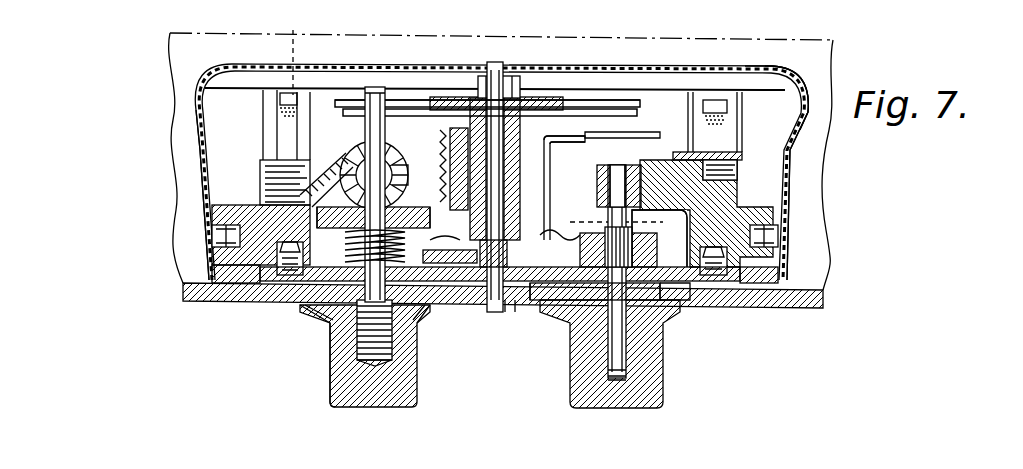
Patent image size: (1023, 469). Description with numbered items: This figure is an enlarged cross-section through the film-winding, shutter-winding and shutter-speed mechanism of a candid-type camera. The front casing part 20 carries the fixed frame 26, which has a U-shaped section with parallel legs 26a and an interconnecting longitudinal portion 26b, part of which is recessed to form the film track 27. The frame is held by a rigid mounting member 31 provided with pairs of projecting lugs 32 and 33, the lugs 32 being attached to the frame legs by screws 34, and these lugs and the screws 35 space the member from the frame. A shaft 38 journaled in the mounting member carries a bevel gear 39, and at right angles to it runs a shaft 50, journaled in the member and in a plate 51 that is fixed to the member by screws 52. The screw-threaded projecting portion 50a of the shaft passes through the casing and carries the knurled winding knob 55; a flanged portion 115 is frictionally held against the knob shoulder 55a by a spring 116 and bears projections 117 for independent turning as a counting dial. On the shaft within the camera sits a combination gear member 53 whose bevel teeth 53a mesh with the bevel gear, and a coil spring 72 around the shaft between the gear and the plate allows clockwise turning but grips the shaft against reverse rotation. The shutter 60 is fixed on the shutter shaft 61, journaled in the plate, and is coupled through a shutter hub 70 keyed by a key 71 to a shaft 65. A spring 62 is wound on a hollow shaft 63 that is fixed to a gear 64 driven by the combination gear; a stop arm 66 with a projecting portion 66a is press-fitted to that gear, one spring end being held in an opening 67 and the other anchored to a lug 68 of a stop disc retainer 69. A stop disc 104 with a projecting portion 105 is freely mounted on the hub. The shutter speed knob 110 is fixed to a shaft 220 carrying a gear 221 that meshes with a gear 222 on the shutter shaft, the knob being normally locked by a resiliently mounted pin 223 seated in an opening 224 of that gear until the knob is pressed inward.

The front casing part 20 is at (185, 305).
The frame 26 is at (237, 58).
The frame legs 26a is at (205, 187).
The interconnecting longitudinal portion 26b is at (757, 70).
The film track 27 is at (763, 87).
The mounting member 31 is at (262, 183).
The lugs 32 is at (210, 265).
The lugs 33 is at (275, 133).
The screws 34 is at (210, 235).
The screw 35 is at (745, 28).
The shaft 38 is at (360, 162).
The bevel gear 39 is at (345, 155).
The shaft 50 is at (378, 155).
The projecting portion of shaft 50a is at (400, 345).
The plate 51 is at (670, 305).
The screws 52 is at (235, 302).
The combination gear member 53 is at (405, 190).
The bevel teeth 53a is at (400, 172).
The knurled winding knob 55 is at (418, 396).
The shoulder 55a is at (330, 330).
The shutter 60 is at (350, 95).
The shutter shaft 61 is at (503, 135).
The spring 62 is at (392, 170).
The hollow shaft 63 is at (551, 163).
The gear 64 is at (560, 305).
The shaft 65 is at (455, 155).
The stop arm 66 is at (551, 178).
The projecting portion of stop arm 66a is at (588, 138).
The opening 67 is at (530, 300).
The lug 68 is at (570, 110).
The stop disc retainer 69 is at (440, 135).
The shutter hub 70 is at (528, 135).
The key 71 is at (468, 95).
The coil spring 72 is at (275, 283).
The stop disc 104 is at (365, 100).
The projecting portion of stop disc 105 is at (565, 130).
The shutter speed knob 110 is at (665, 397).
The flanged portion 115 is at (318, 306).
The spring 116 is at (312, 310).
The projections 117 is at (405, 320).
The shaft 220 is at (624, 355).
The gear 221 is at (665, 258).
The gear 222 is at (510, 300).
The resiliently mounted pin 223 is at (555, 240).
The opening 224 is at (565, 305).